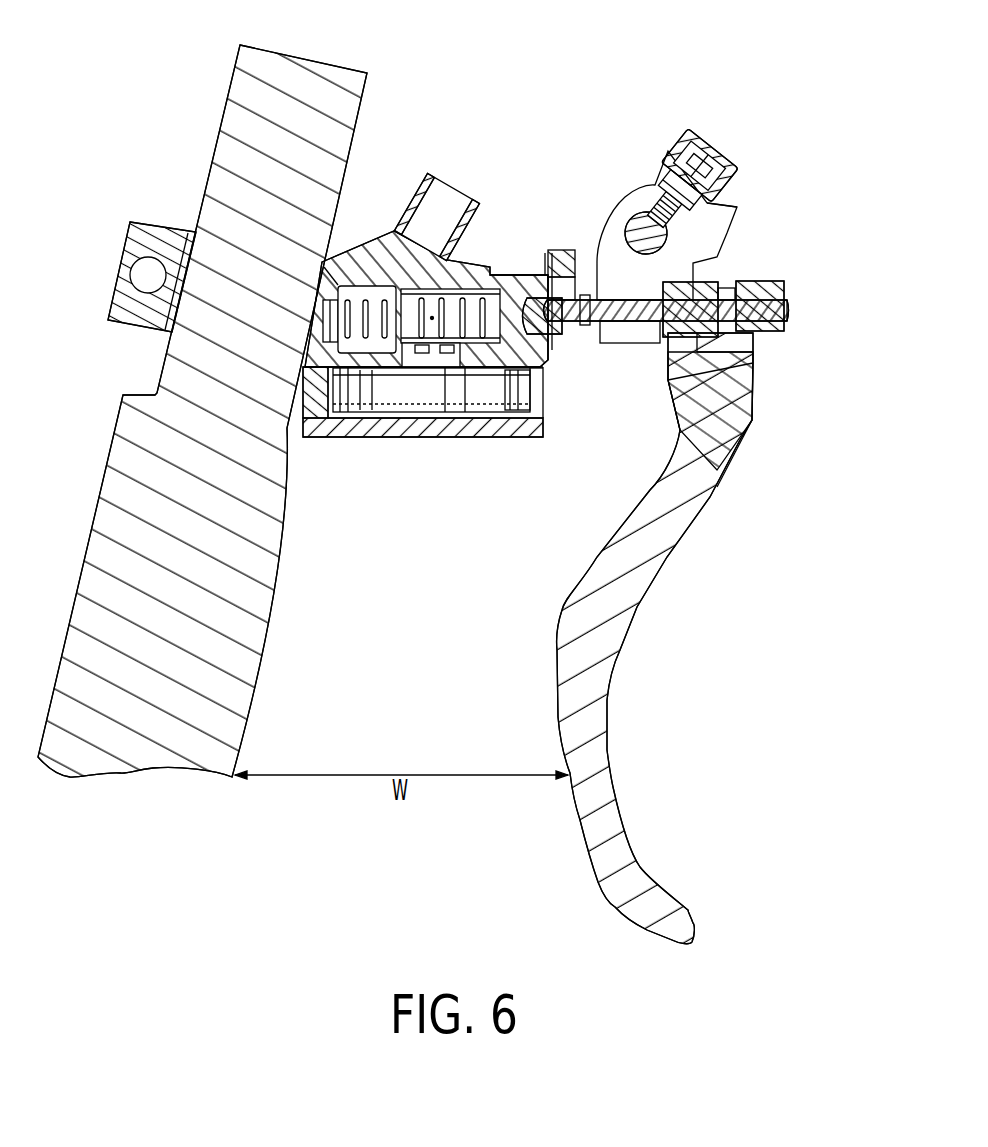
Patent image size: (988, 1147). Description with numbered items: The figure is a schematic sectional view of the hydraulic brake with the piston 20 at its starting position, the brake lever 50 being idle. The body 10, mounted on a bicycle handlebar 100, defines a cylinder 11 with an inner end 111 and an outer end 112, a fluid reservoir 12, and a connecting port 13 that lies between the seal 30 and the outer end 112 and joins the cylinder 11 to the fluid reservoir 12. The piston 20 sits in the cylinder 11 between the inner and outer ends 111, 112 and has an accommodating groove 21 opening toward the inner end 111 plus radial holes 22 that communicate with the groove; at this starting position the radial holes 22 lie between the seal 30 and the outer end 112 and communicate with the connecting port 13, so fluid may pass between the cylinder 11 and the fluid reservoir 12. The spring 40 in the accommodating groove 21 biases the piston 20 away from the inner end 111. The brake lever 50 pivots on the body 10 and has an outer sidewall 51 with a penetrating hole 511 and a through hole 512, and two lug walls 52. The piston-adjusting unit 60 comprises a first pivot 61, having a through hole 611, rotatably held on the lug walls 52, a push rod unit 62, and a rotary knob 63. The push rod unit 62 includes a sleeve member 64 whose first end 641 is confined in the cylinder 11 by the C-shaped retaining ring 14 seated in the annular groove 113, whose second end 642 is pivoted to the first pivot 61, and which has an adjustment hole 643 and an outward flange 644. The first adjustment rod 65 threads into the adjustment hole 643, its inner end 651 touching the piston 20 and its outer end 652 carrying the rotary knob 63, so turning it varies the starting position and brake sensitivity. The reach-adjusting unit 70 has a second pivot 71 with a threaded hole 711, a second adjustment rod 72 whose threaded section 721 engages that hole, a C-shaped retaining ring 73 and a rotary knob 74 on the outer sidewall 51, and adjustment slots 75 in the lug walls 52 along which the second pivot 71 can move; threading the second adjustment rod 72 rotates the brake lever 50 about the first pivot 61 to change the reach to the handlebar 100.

The bicycle handlebar 100 is at (75, 600).
The body 10 is at (317, 398).
The cylinder 11 is at (445, 200).
The inner end 111 is at (348, 262).
The outer end 112 is at (489, 278).
The annular groove 113 is at (550, 262).
The fluid reservoir 12 is at (345, 398).
The connecting port 13 is at (437, 385).
The C-shaped retaining ring 14 is at (555, 368).
The piston 20 is at (455, 262).
The accommodating groove 21 is at (472, 345).
The radial holes 22 is at (455, 378).
The seal 30 is at (400, 398).
The spring 40 is at (352, 283).
The brake lever 50 is at (608, 707).
The outer sidewall 51 is at (745, 212).
The penetrating hole 511 is at (735, 350).
The through hole 512 is at (738, 195).
The lug walls 52 is at (712, 220).
The piston-adjusting unit 60 is at (788, 280).
The first pivot 61 is at (750, 422).
The through hole 611 is at (735, 375).
The push rod unit 62 is at (620, 352).
The rotary knob 63 is at (790, 328).
The sleeve member 64 is at (578, 350).
The first end 641 is at (587, 330).
The second end 642 is at (730, 280).
The adjustment hole 643 is at (563, 262).
The outward flange 644 is at (548, 262).
The first adjustment rod 65 is at (640, 333).
The inner end 651 is at (536, 368).
The outer end 652 is at (785, 308).
The reach-adjusting unit 70 is at (673, 150).
The second pivot 71 is at (671, 202).
The threaded hole 711 is at (645, 232).
The second adjustment rod 72 is at (699, 165).
The threaded section 721 is at (666, 208).
The C-shaped retaining ring 73 is at (680, 190).
The rotary knob 74 is at (699, 165).
The adjustment slots 75 is at (656, 221).